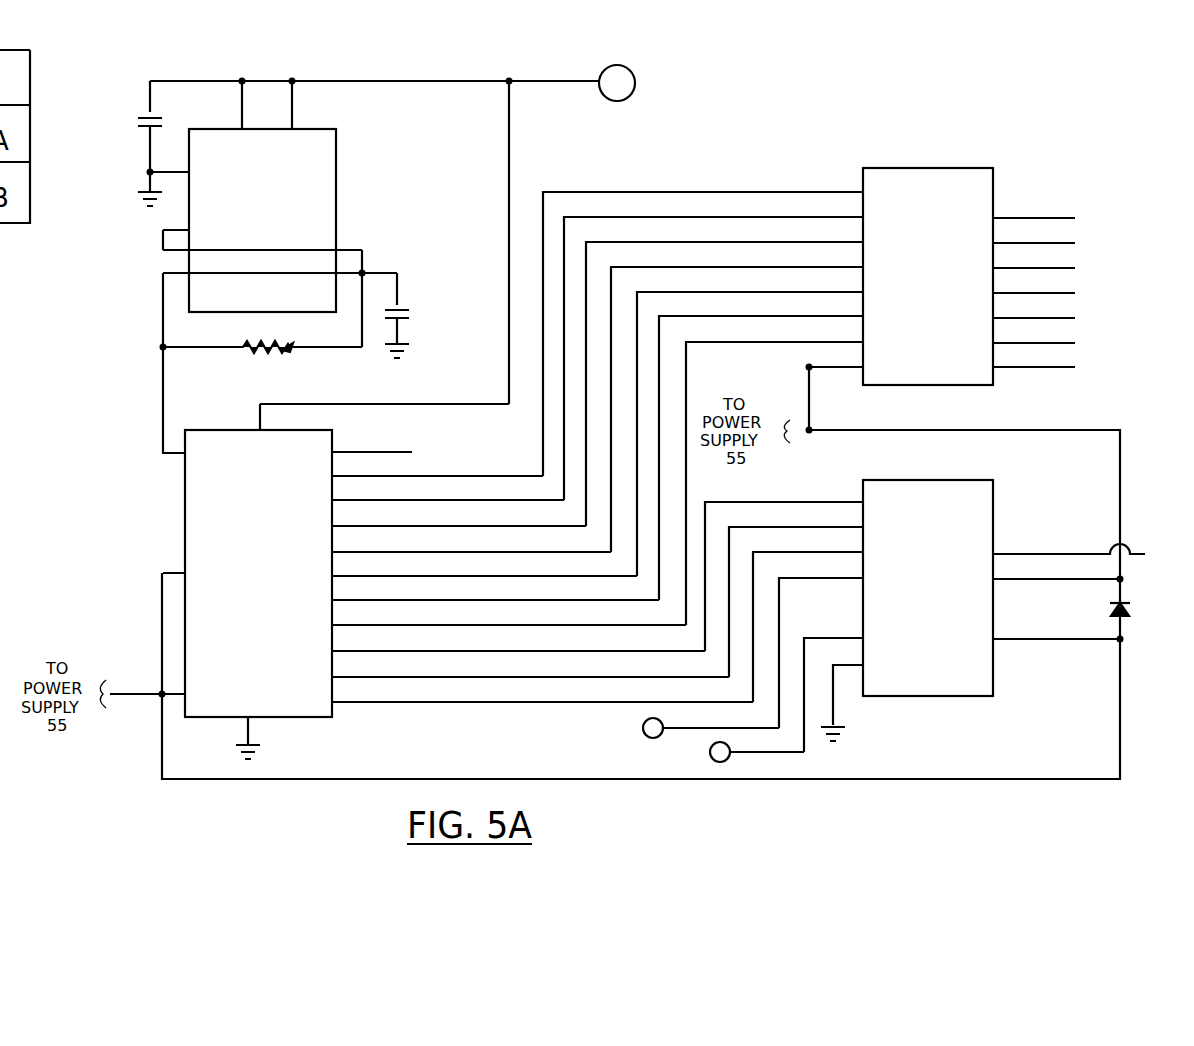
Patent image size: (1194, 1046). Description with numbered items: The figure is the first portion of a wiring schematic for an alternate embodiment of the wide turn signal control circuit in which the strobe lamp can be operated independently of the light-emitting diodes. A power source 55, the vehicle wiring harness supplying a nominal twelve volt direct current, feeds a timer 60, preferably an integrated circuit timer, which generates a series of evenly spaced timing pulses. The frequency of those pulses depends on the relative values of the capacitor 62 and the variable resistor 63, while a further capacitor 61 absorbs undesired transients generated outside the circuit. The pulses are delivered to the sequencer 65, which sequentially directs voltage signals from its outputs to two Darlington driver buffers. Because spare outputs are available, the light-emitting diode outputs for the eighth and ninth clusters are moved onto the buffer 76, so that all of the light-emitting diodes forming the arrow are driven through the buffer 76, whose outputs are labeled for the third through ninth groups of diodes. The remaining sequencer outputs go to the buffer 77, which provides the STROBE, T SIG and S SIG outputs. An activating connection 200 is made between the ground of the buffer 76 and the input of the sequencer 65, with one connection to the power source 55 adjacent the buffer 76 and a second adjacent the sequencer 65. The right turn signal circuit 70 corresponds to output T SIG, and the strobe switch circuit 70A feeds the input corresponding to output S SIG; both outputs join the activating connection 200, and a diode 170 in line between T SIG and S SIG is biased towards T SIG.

The power source 55 is at (618, 65).
The timer 60 is at (337, 197).
The capacitor 61 is at (131, 130).
The capacitor 62 is at (422, 318).
The variable resistor 63 is at (219, 364).
The sequencer 65 is at (185, 530).
The buffer 76 is at (925, 167).
The buffer 77 is at (920, 480).
The right turn signal circuit 70 is at (655, 740).
The strobe switch circuit 70A is at (711, 759).
The diode 170 is at (1132, 610).
The activating connection 200 is at (237, 779).